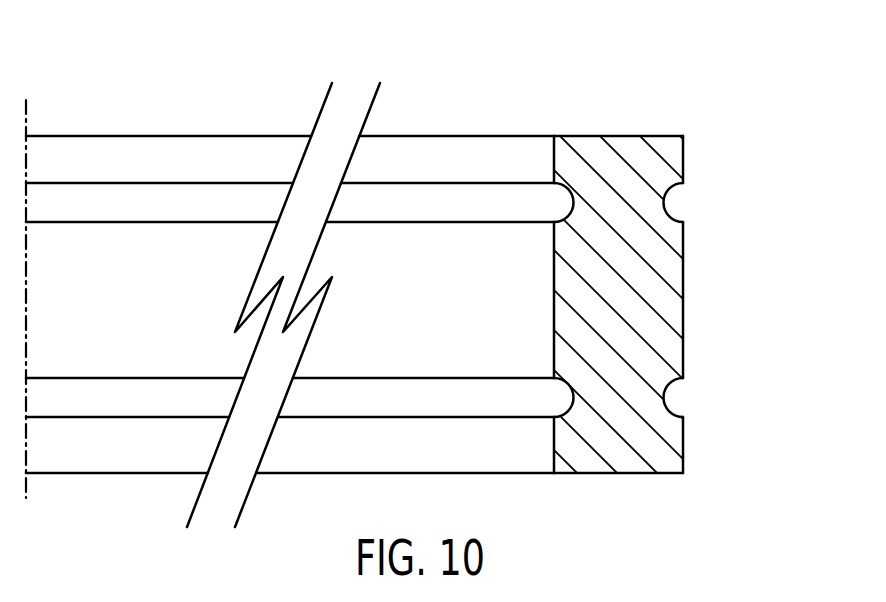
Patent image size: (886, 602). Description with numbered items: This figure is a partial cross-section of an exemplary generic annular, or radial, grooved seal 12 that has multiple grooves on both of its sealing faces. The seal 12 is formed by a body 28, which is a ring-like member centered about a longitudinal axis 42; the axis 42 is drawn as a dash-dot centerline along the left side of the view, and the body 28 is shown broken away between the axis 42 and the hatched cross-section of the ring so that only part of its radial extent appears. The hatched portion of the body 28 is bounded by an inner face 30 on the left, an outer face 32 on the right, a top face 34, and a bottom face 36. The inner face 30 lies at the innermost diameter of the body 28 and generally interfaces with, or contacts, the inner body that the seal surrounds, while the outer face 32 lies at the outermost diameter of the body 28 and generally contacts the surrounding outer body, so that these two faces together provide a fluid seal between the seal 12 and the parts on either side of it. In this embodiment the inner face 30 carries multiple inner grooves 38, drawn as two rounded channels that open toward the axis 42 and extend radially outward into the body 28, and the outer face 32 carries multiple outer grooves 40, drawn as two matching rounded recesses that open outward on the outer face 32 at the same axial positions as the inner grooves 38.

The grooved seal 12 is at (688, 80).
The body 28 is at (570, 92).
The inner face 30 is at (553, 274).
The outer face 32 is at (684, 314).
The top face 34 is at (604, 135).
The bottom face 36 is at (632, 474).
The inner grooves 38 is at (548, 203).
The outer grooves 40 is at (696, 198).
The longitudinal axis 42 is at (27, 125).